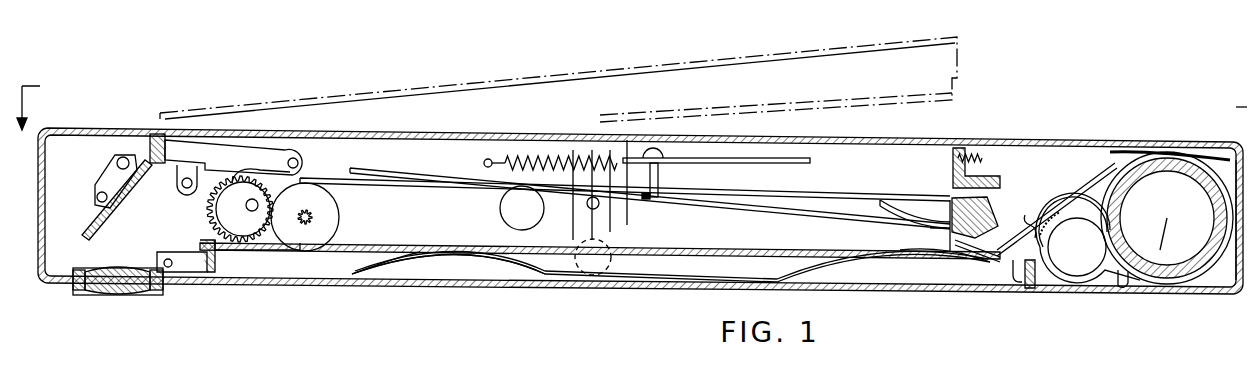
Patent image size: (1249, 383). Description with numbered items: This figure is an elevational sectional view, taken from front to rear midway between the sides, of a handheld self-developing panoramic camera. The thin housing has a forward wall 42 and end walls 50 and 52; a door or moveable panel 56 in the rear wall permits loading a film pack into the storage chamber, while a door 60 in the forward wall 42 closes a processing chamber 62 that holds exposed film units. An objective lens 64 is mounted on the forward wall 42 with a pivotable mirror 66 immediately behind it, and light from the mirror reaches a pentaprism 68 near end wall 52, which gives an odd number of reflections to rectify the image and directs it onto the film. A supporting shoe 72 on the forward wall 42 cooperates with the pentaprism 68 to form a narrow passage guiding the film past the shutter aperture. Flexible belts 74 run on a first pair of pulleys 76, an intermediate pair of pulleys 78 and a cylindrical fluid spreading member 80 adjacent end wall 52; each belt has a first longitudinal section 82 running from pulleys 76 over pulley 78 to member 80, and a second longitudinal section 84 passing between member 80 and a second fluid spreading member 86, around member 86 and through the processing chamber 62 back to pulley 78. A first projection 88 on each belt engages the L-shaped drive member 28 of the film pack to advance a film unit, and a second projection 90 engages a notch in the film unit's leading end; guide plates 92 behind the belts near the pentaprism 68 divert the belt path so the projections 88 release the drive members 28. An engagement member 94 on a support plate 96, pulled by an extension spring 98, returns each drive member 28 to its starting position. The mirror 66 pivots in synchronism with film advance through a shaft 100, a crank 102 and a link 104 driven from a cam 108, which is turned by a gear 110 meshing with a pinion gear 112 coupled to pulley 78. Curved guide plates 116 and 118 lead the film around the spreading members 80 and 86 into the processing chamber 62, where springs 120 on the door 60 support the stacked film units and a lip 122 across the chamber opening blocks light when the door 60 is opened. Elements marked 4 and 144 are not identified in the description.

The section line 4 is at (632, 103).
The L-shaped drive member 28 is at (650, 200).
The forward wall 42 is at (185, 280).
The end wall 50 is at (45, 258).
The end wall 52 is at (1212, 296).
The door or moveable panel 56 is at (760, 47).
The door or moveable panel 60 is at (528, 268).
The processing chamber 62 is at (462, 268).
The objective lens 64 is at (112, 292).
The mirror 66 is at (157, 134).
The pentaprism 68 is at (963, 237).
The supporting shoe 72 is at (990, 172).
The flexible belts 74 is at (1074, 170).
The first pair of pulleys 76 is at (338, 222).
The intermediate pair of pulleys 78 is at (512, 210).
The cylindrical fluid spreading member 80 is at (1195, 280).
The first longitudinal section 82 is at (802, 215).
The second longitudinal section 84 is at (603, 262).
The second cylindrical fluid spreading member 86 is at (1082, 250).
The first projection 88 is at (618, 196).
The second projection 90 is at (932, 226).
The guide plates 92 is at (902, 205).
The engagement member 94 is at (660, 177).
The support plate 96 is at (765, 165).
The extension spring 98 is at (562, 150).
The shaft 100 is at (108, 185).
The crank 102 is at (118, 160).
The link 104 is at (190, 158).
The cam 108 is at (226, 207).
The gear 110 is at (228, 216).
The pinion gear 112 is at (315, 218).
The curved guide plate 116 is at (1218, 152).
The curved guide plate 118 is at (1040, 216).
The springs 120 is at (385, 262).
The lip 122 is at (1010, 286).
The motor shaft 144 is at (1162, 252).